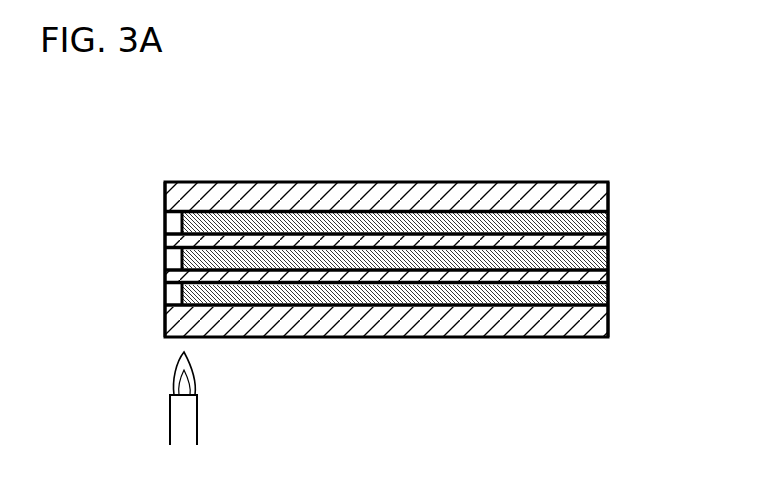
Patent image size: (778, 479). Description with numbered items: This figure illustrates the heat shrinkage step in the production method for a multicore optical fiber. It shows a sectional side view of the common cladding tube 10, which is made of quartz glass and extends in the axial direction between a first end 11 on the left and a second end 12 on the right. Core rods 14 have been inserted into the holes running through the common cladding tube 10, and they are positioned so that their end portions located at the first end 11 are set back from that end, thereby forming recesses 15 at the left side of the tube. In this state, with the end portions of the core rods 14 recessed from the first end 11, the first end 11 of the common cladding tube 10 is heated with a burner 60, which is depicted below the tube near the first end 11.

The common cladding tube 10 is at (427, 182).
The first end 11 is at (165, 182).
The second end 12 is at (610, 182).
The core rods 14 is at (600, 224).
The recesses 15 is at (166, 224).
The burner 60 is at (171, 410).